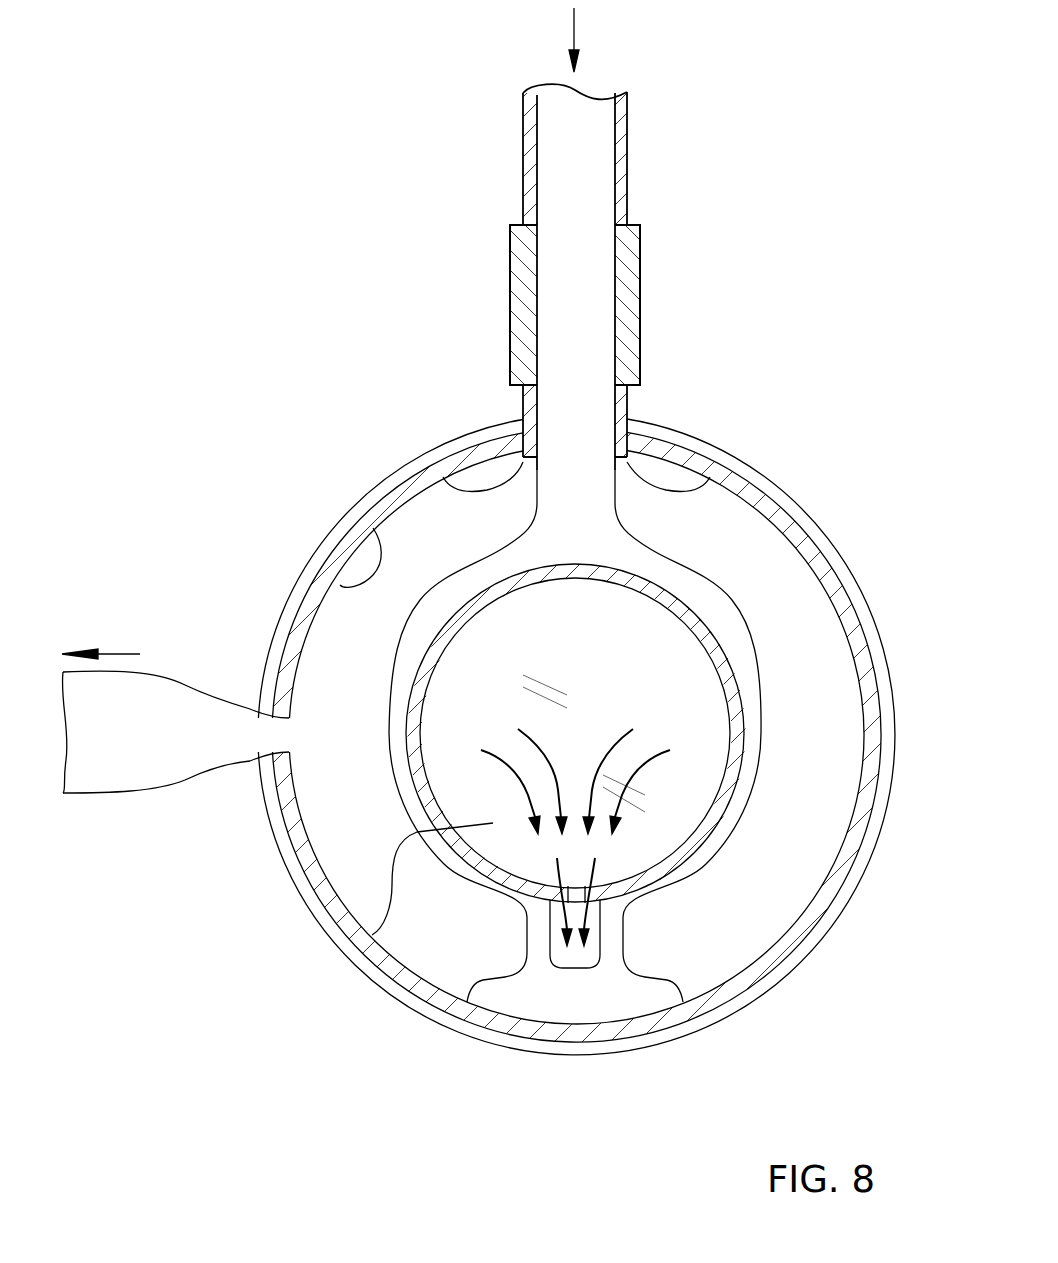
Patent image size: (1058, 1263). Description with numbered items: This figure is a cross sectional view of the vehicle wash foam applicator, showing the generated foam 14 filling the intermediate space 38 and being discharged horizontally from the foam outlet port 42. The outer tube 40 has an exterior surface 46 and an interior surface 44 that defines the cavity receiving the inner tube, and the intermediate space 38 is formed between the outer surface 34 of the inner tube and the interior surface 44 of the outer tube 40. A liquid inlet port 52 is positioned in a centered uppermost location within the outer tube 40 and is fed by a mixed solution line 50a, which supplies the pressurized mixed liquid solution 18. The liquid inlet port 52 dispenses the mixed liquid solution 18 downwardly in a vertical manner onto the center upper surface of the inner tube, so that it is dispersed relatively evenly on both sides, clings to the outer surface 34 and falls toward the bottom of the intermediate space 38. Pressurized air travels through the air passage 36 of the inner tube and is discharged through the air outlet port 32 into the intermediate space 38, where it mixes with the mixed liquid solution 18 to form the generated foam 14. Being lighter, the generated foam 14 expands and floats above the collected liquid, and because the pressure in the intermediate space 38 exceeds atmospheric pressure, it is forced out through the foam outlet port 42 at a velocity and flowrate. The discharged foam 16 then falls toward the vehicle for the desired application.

The mixed solution line 50a is at (627, 160).
The outer tube 40 is at (710, 458).
The intermediate space 38 is at (753, 567).
The liquid inlet port 52 is at (450, 483).
The exterior surface 46 is at (353, 523).
The interior surface 44 is at (343, 587).
The foam outlet port 42 is at (272, 705).
The discharged foam 16 is at (155, 765).
The air passage 36 is at (372, 935).
The generated foam 14 is at (433, 933).
The air outlet port 32 is at (570, 900).
The mixed liquid solution 18 is at (632, 993).
The outer surface 34 is at (717, 840).